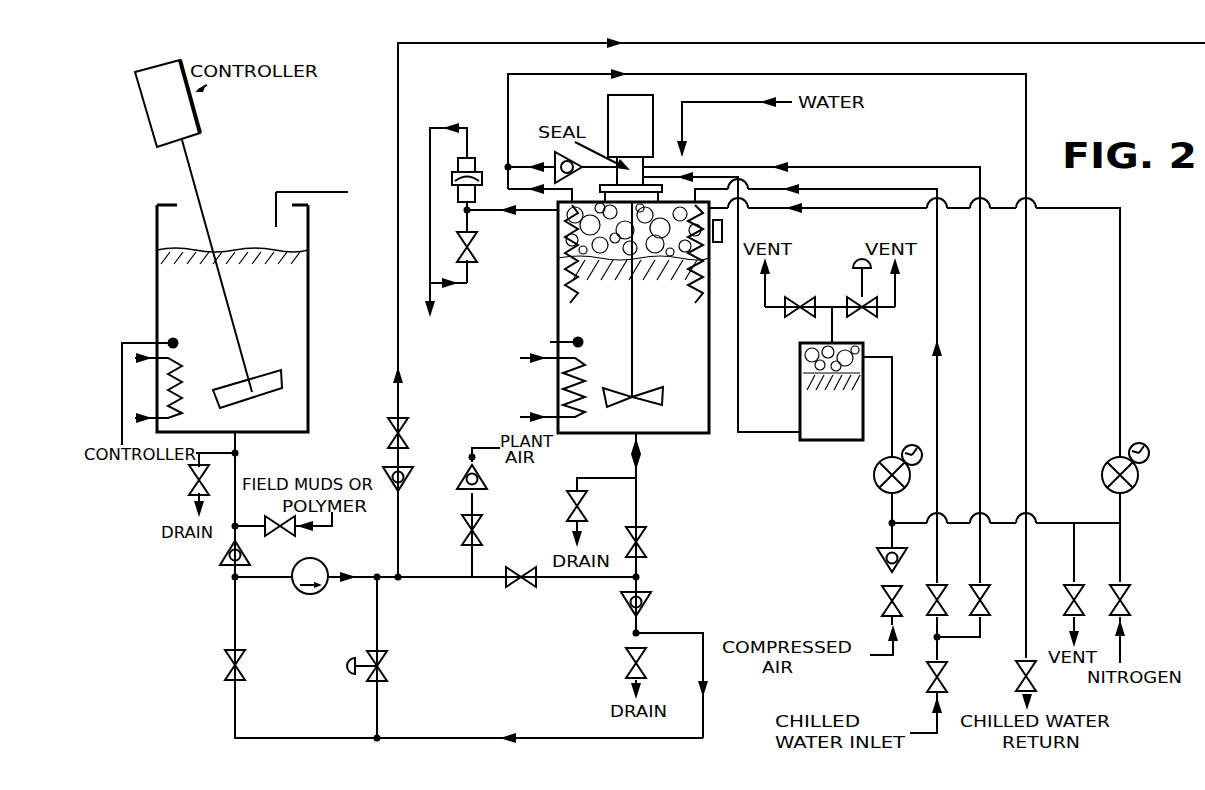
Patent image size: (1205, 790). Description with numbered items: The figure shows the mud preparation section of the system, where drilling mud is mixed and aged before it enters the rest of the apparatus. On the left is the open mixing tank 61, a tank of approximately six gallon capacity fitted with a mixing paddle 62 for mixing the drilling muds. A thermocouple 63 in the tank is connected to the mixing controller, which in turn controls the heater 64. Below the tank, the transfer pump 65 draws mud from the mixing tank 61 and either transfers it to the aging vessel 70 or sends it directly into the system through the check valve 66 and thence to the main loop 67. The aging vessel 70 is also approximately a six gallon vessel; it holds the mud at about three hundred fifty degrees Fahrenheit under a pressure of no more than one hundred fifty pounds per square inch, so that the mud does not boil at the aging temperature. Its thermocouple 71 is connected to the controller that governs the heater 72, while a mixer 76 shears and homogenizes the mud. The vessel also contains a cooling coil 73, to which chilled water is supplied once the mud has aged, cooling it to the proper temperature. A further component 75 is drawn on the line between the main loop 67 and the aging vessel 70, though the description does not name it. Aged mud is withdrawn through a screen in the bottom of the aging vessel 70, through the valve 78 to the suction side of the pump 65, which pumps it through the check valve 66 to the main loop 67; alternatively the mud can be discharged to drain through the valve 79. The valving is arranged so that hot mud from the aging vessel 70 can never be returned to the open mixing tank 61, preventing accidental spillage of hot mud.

The open mixing tank 61 is at (309, 325).
The mixing paddle 62 is at (258, 378).
The thermocouple 63 is at (173, 341).
The heater 64 is at (183, 381).
The transfer pump 65 is at (310, 558).
The check valve 66 is at (386, 473).
The main loop 67 is at (397, 140).
The aging vessel 70 is at (712, 403).
The thermocouple 71 is at (579, 339).
The heater 72 is at (583, 378).
The cooling coil 73 is at (578, 278).
The pressure regulator 75 is at (473, 165).
The mixer 76 is at (643, 392).
The valve 78 is at (645, 533).
The valve 79 is at (571, 497).